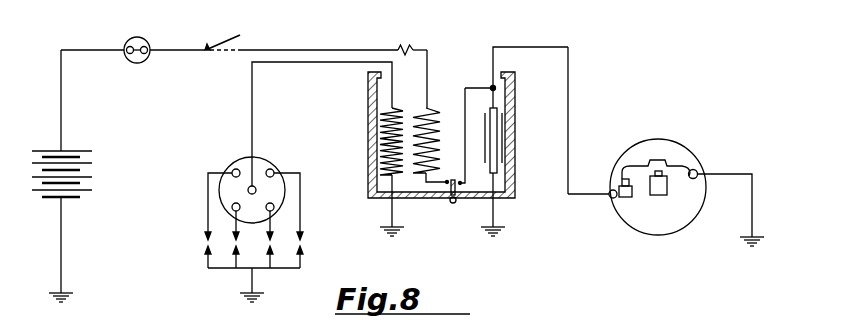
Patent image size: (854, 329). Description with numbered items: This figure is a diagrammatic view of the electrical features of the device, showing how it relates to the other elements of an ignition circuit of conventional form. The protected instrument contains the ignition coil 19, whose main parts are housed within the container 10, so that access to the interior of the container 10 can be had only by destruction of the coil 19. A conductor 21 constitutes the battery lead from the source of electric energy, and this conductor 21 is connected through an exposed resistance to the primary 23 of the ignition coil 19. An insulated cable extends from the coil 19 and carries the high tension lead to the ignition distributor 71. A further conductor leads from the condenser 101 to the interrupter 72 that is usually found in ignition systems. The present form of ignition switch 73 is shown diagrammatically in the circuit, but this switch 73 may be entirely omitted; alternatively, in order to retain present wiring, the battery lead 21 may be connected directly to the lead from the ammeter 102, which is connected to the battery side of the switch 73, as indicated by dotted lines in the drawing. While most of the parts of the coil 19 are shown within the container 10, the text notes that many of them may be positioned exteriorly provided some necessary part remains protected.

The container 10 is at (372, 110).
The ignition coil 19 is at (384, 141).
The conductor 21 is at (324, 38).
The primary 23 is at (427, 177).
The ignition distributor 71 is at (241, 162).
The interrupter 72 is at (652, 144).
The ignition switch 73 is at (230, 42).
The condenser 101 is at (503, 162).
The ammeter 102 is at (139, 63).